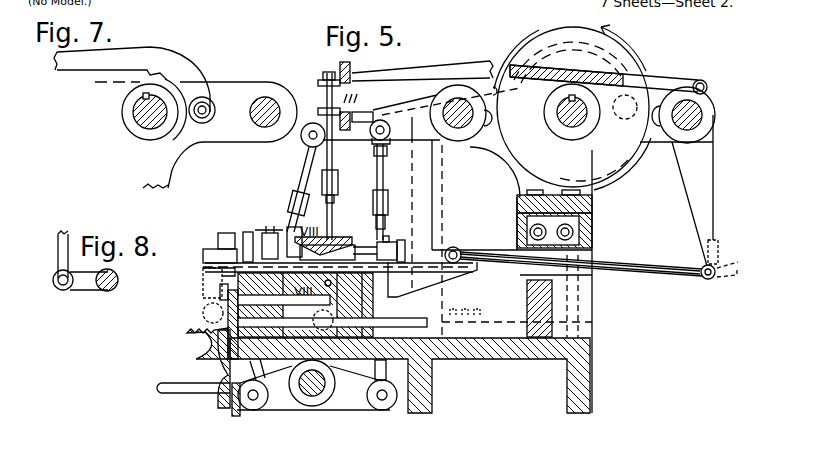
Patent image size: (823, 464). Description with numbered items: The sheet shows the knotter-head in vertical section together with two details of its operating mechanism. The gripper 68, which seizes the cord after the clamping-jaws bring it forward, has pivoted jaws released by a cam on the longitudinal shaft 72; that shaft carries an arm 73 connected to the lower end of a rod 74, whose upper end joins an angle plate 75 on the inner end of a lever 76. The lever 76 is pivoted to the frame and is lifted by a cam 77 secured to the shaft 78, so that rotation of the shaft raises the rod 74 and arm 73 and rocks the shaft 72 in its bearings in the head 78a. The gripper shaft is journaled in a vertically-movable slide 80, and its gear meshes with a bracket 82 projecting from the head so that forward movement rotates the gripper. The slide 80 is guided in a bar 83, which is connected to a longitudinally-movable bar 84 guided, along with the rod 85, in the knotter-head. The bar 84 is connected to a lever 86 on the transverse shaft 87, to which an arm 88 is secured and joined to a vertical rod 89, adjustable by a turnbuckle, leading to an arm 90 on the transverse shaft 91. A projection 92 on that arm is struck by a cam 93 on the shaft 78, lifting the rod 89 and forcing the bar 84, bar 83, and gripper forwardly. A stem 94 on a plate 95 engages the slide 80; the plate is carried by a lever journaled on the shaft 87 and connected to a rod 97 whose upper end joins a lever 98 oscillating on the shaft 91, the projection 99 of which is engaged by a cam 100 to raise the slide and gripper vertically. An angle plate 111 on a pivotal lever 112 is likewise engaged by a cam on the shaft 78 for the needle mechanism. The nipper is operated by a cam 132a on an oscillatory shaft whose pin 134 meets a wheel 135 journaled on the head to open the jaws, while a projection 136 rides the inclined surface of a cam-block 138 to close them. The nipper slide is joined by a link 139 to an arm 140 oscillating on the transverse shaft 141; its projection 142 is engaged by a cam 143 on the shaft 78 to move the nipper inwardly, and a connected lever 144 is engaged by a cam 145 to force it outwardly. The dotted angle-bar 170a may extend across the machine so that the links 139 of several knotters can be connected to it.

In FIG. 5, the gripper 68 is at (208, 283).
In FIG. 8, the longitudinal shaft or rod 72 is at (118, 281).
In FIG. 5, the longitudinal shaft or rod 72 is at (224, 290).
In FIG. 8, the arm 73 is at (90, 288).
In FIG. 5, the arm 73 is at (327, 292).
In FIG. 8, the rod 74 is at (58, 252).
In FIG. 5, the rod 74 is at (327, 95).
In FIG. 5, the angle plate or iron 75 is at (340, 66).
In FIG. 5, the lever 76 is at (391, 75).
In FIG. 7, the cam 77 is at (187, 93).
In FIG. 7, the shaft 78 is at (147, 120).
In FIG. 5, the shaft 78 is at (583, 118).
In FIG. 5, the head 78a is at (429, 375).
In FIG. 5, the vertically-movable slide 80 is at (220, 372).
In FIG. 5, the bracket 82 is at (196, 338).
In FIG. 5, the bar 83 is at (226, 306).
In FIG. 5, the longitudinally-movable bar 84 is at (410, 326).
In FIG. 5, the rod 85 is at (284, 300).
In FIG. 5, the lever 86 is at (300, 420).
In FIG. 5, the transverse shaft 87 is at (314, 396).
In FIG. 5, the arm 88 is at (360, 405).
In FIG. 5, the vertical rod 89 is at (385, 226).
In FIG. 5, the arm or lever 90 is at (414, 203).
In FIG. 5, the transverse shaft 91 is at (459, 128).
In FIG. 5, the projection or cam 92 is at (490, 88).
In FIG. 5, the cam 93 is at (516, 58).
In FIG. 5, the stem or rod 94 is at (196, 396).
In FIG. 5, the bar or plate 95 is at (238, 417).
In FIG. 5, the rod 97 is at (302, 178).
In FIG. 5, the arm or lever 98 is at (375, 112).
In FIG. 5, the projection 99 is at (486, 140).
In FIG. 5, the cam 100 is at (575, 27).
In FIG. 5, the angle plate or bar 111 is at (350, 98).
In FIG. 5, the pivotal lever 112 is at (376, 144).
In FIG. 5, the cam 132a is at (243, 238).
In FIG. 5, the projecting portion or pin 134 is at (266, 232).
In FIG. 5, the wheel 135 is at (282, 238).
In FIG. 5, the projection 136 is at (420, 245).
In FIG. 5, the cam-block 138 is at (362, 245).
In FIG. 5, the link 139 is at (628, 276).
In FIG. 5, the arm or lever 140 is at (716, 210).
In FIG. 5, the transverse shaft 141 is at (702, 119).
In FIG. 5, the projecting portion 142 is at (655, 126).
In FIG. 5, the cam 143 is at (616, 178).
In FIG. 5, the lever 144 is at (650, 80).
In FIG. 5, the cam 145 is at (546, 99).
In FIG. 5, the angle-bar 170a is at (737, 265).